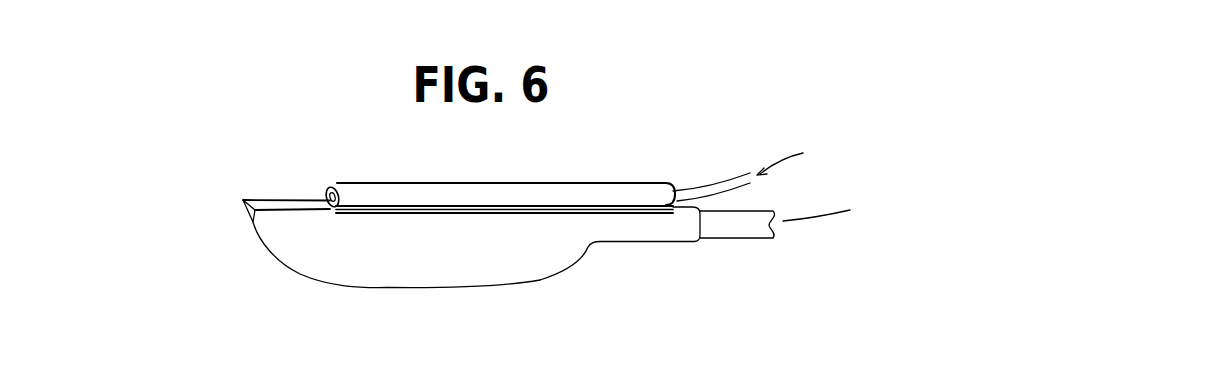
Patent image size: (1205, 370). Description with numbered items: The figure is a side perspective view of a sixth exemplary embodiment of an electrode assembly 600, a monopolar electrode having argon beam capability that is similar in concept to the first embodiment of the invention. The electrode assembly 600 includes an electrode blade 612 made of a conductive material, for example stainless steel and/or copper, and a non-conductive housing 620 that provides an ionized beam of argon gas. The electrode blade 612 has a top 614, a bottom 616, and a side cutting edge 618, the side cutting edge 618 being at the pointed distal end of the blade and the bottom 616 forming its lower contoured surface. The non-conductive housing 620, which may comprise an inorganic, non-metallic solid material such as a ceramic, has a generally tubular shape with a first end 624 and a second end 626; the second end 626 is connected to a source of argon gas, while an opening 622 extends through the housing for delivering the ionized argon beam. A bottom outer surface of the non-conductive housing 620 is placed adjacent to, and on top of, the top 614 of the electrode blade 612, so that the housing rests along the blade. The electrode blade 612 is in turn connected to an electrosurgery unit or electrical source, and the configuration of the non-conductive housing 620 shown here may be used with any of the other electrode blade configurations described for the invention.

The electrode assembly 600 is at (639, 141).
The electrode blade 612 is at (553, 249).
The top 614 is at (269, 200).
The bottom 616 is at (387, 288).
The side cutting edge 618 is at (265, 252).
The non-conductive housing 620 is at (527, 183).
The opening 622 is at (338, 187).
The first end 624 is at (327, 190).
The second end 626 is at (672, 182).